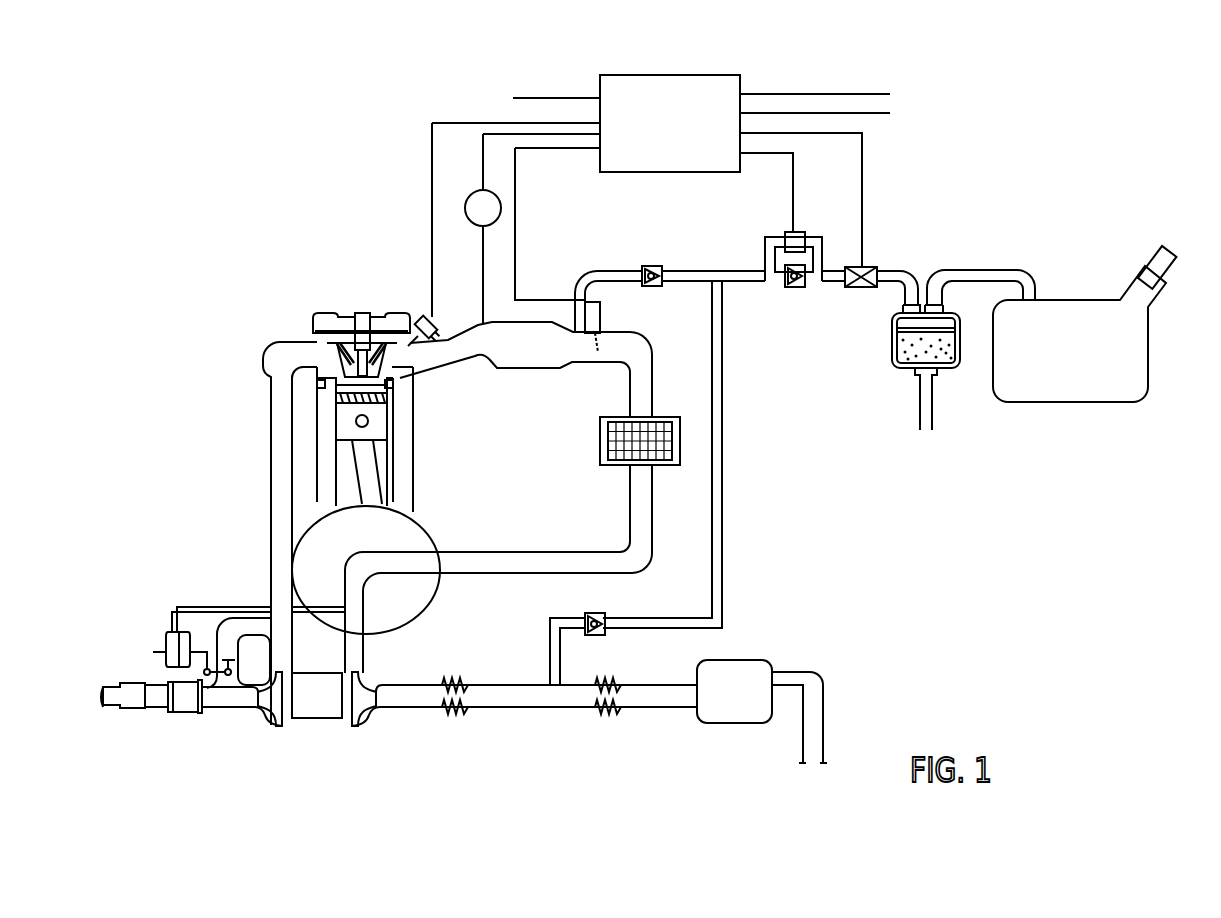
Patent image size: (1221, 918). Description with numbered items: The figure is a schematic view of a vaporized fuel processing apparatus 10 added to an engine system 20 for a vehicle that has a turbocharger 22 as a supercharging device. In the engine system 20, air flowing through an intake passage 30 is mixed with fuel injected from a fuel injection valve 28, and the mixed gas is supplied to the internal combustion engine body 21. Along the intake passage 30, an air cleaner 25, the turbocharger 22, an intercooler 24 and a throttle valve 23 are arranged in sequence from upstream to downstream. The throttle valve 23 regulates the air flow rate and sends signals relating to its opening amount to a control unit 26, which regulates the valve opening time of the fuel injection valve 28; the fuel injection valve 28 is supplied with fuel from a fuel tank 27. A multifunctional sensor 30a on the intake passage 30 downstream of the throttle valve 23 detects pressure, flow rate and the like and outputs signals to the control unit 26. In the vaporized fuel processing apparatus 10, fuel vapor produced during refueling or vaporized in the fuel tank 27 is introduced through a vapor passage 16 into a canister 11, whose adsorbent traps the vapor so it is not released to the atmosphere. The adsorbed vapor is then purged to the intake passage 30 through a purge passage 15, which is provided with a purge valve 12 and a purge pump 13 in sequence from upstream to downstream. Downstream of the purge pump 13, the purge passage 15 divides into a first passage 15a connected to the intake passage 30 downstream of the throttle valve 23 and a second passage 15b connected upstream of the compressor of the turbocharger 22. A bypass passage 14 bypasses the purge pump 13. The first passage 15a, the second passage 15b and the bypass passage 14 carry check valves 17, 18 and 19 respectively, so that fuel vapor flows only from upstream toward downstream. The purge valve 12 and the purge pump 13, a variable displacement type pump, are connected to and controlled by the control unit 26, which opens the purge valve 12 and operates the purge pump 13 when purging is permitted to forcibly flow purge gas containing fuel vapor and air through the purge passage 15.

The vaporized fuel processing apparatus 10 is at (971, 202).
The canister 11 is at (942, 372).
The purge valve 12 is at (868, 265).
The purge pump 13 is at (801, 232).
The bypass passage 14 is at (815, 284).
The purge passage 15 is at (735, 268).
The first passage 15a is at (597, 268).
The second passage 15b is at (722, 519).
The vapor passage 16 is at (1000, 270).
The check valve 17 is at (652, 265).
The check valve 18 is at (595, 612).
The check valve 19 is at (794, 290).
The engine system 20 is at (293, 276).
The internal combustion engine body 21 is at (395, 311).
The turbocharger 22 is at (312, 720).
The throttle valve 23 is at (585, 355).
The intercooler 24 is at (680, 437).
The air cleaner 25 is at (735, 725).
The control unit 26 is at (690, 75).
The fuel tank 27 is at (1092, 300).
The fuel injection valve 28 is at (437, 317).
The intake passage 30 is at (655, 522).
The multifunctional sensor 30a is at (465, 204).